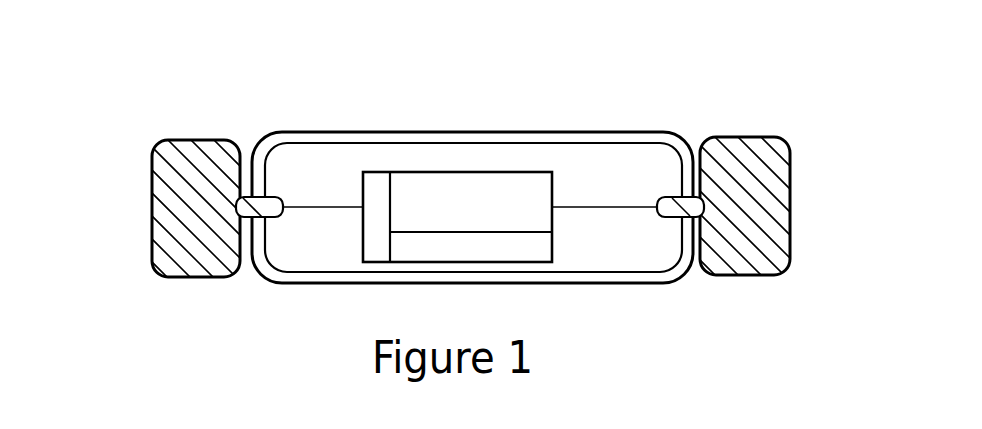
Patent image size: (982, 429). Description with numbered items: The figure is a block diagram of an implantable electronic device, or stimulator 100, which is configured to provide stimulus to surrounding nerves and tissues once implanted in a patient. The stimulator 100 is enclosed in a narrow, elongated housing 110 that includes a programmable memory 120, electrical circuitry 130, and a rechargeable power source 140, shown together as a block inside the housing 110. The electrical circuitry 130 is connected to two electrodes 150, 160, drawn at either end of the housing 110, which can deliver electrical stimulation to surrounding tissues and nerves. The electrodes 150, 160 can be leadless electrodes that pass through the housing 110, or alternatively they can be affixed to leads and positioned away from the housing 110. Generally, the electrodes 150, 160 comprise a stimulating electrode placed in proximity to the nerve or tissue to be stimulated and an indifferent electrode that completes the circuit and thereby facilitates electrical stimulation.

The stimulator 100 is at (198, 100).
The housing 110 is at (585, 137).
The programmable memory 120 is at (380, 172).
The electrical circuitry 130 is at (520, 172).
The rechargeable power source 140 is at (552, 247).
The electrode 150 is at (775, 207).
The electrode 160 is at (170, 205).